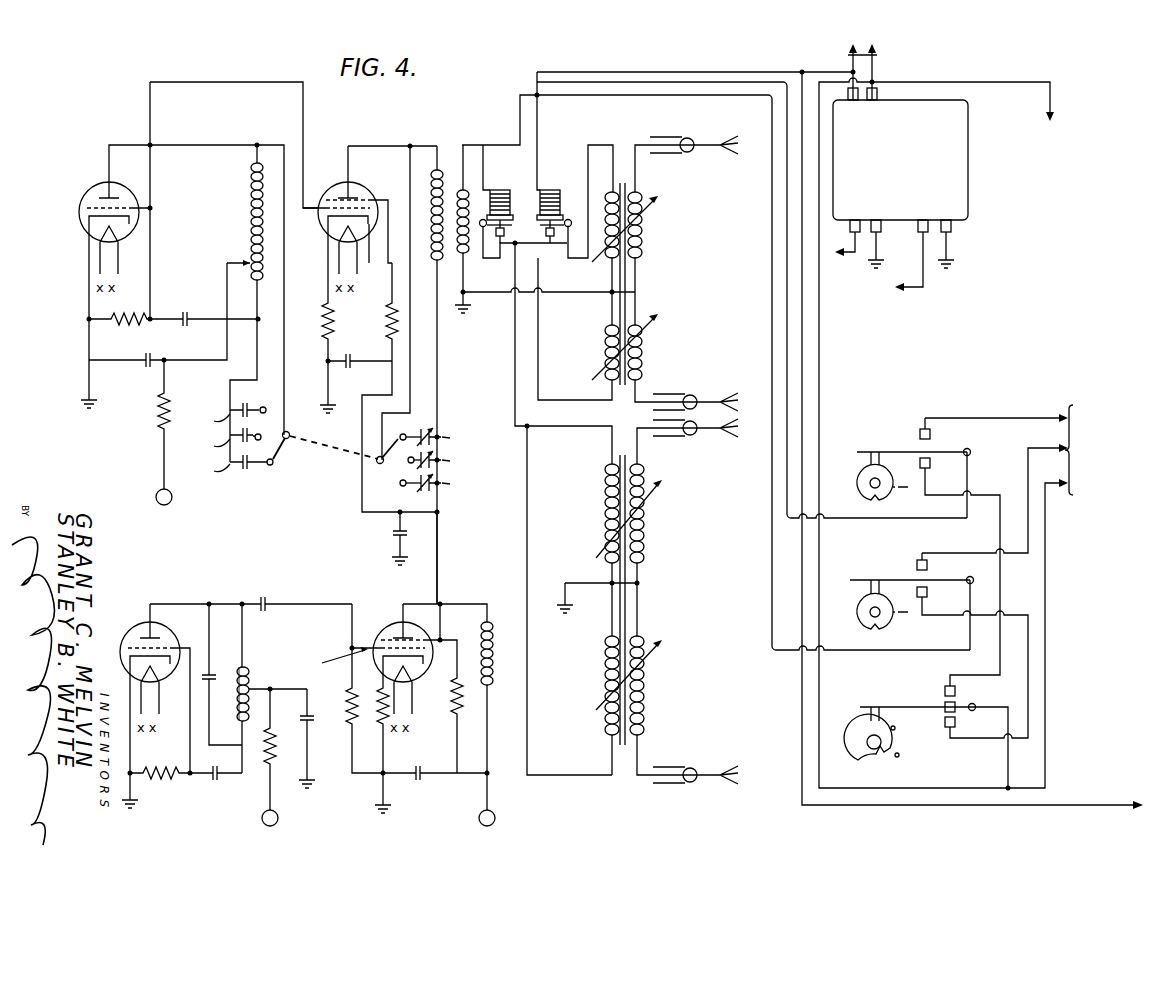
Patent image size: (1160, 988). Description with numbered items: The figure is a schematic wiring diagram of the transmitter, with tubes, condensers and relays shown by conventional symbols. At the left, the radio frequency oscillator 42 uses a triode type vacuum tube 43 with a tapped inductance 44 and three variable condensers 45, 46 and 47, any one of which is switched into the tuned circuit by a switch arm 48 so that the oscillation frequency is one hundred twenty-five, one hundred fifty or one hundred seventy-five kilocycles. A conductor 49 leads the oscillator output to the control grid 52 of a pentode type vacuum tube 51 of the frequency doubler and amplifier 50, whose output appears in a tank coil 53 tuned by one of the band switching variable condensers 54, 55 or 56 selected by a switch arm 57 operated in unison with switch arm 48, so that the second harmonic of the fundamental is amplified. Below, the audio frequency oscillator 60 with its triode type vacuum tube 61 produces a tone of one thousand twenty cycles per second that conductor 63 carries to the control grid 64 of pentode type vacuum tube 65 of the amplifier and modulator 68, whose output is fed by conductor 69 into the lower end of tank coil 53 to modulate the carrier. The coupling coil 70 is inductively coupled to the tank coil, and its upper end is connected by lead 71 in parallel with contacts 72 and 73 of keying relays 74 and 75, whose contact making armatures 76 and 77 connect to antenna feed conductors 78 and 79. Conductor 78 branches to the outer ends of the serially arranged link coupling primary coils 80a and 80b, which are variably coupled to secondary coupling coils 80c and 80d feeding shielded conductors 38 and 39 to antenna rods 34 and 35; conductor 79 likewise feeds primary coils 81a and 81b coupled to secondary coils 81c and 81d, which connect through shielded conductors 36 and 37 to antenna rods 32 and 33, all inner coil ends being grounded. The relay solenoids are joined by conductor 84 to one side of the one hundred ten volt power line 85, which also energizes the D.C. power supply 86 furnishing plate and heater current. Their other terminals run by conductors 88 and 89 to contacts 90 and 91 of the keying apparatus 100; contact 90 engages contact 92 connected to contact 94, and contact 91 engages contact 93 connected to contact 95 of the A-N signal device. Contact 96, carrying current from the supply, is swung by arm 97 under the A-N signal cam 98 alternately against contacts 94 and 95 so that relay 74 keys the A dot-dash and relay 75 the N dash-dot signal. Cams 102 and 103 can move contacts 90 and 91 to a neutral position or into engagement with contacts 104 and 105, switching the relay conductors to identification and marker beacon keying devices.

The antenna rod 32 is at (724, 150).
The antenna rod 33 is at (729, 393).
The antenna rod 34 is at (729, 439).
The antenna rod 35 is at (729, 766).
The shielded conductor 36 is at (678, 140).
The shielded conductor 37 is at (680, 398).
The shielded conductor 38 is at (680, 436).
The shielded conductor 39 is at (679, 770).
The radio frequency oscillator 42 is at (182, 294).
The triode type vacuum tube 43 is at (80, 216).
The tapped inductance 44 is at (250, 210).
The variable condenser 45 is at (262, 400).
The variable condenser 46 is at (226, 433).
The variable condenser 47 is at (226, 475).
The switch arm 48 is at (281, 448).
The conductor 49 is at (207, 88).
The frequency doubler and amplifier 50 is at (388, 281).
The pentode type vacuum tube 51 is at (332, 188).
The control grid 52 is at (322, 223).
The tank coil 53 is at (436, 184).
The band switching variable condenser 54 is at (432, 430).
The band switching variable condenser 55 is at (406, 468).
The band switching variable condenser 56 is at (409, 491).
The switch arm 57 is at (375, 453).
The audio frequency oscillator 60 is at (241, 715).
The triode type vacuum tube 61 is at (130, 638).
The conductor 63 is at (274, 610).
The control grid 64 is at (334, 660).
The pentode type vacuum tube 65 is at (389, 636).
The amplifier and modulator 68 is at (434, 701).
The conductor 69 is at (441, 561).
The coupling coil 70 is at (468, 257).
The lead 71 is at (469, 140).
The contact 72 is at (525, 242).
The contact 73 is at (577, 202).
The keying relay 74 is at (503, 190).
The keying relay 75 is at (555, 190).
The contact making armature 76 is at (482, 219).
The contact making armature 77 is at (567, 219).
The antenna feed conductor 78 is at (512, 305).
The antenna feed conductor 79 is at (541, 324).
The link coupling primary coil 80a is at (603, 487).
The link coupling primary coil 80b is at (603, 654).
The secondary coupling coil 80c is at (645, 495).
The secondary coupling coil 80d is at (645, 658).
The antenna link coupling primary coil 81a is at (606, 258).
The antenna link coupling primary coil 81b is at (606, 338).
The secondary link coupling coil 81c is at (642, 258).
The secondary link coupling coil 81d is at (646, 360).
The conductor 84 is at (560, 78).
The 110 volt power line 85 is at (878, 55).
The D.C. power supply 86 is at (908, 199).
The conductor 88 is at (697, 79).
The conductor 89 is at (771, 204).
The contact 90 is at (934, 452).
The contact 91 is at (932, 580).
The contact 92 is at (932, 464).
The contact 93 is at (932, 594).
The contact 94 is at (956, 692).
The contact 95 is at (945, 725).
The contact 96 is at (943, 705).
The arm 97 is at (878, 704).
The A-N signal cam 98 is at (862, 738).
The keying apparatus 100 is at (1001, 450).
The switching cam 102 is at (859, 485).
The switching cam 103 is at (859, 614).
The contact 104 is at (918, 435).
The contact 105 is at (915, 565).